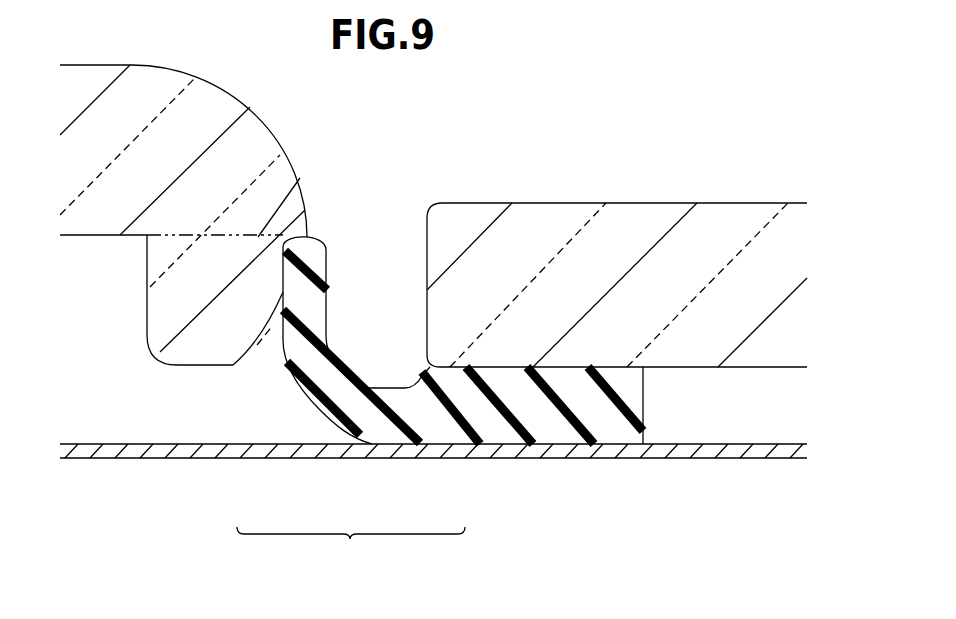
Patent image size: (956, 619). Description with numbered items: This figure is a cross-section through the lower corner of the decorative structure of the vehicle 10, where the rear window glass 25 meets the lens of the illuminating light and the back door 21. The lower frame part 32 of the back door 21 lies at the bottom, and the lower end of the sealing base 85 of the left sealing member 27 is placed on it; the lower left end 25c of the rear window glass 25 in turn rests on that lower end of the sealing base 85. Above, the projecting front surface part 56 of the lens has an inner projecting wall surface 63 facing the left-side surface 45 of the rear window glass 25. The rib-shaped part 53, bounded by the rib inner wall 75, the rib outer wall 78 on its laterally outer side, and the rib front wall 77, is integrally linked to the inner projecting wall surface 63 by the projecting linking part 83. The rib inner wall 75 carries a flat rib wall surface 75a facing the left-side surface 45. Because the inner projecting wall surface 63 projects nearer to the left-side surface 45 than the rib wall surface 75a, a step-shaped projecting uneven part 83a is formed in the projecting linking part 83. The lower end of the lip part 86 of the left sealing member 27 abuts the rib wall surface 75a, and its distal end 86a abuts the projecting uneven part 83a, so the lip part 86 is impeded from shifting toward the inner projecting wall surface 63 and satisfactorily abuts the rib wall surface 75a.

The vehicle 10 is at (495, 87).
The projecting front surface part 56 is at (143, 80).
The projecting linking part 83 is at (300, 178).
The inner projecting wall surface 63 is at (305, 192).
The projecting uneven part 83a is at (320, 240).
The distal end 86a is at (310, 259).
The rib wall surface 75a is at (283, 283).
The rib inner wall 75 is at (276, 310).
The rib outer wall 78 is at (148, 312).
The rib front wall 77 is at (203, 352).
The rib-shaped part 53 is at (155, 352).
The lip part 86 is at (233, 367).
The sealing base 85 is at (490, 424).
The left sealing member 27 is at (341, 379).
The rear window glass 25 is at (617, 203).
The lower left end 25c is at (538, 203).
The left-side surface 45 is at (428, 294).
The lower frame part 32 is at (570, 445).
The back door 21 is at (703, 442).